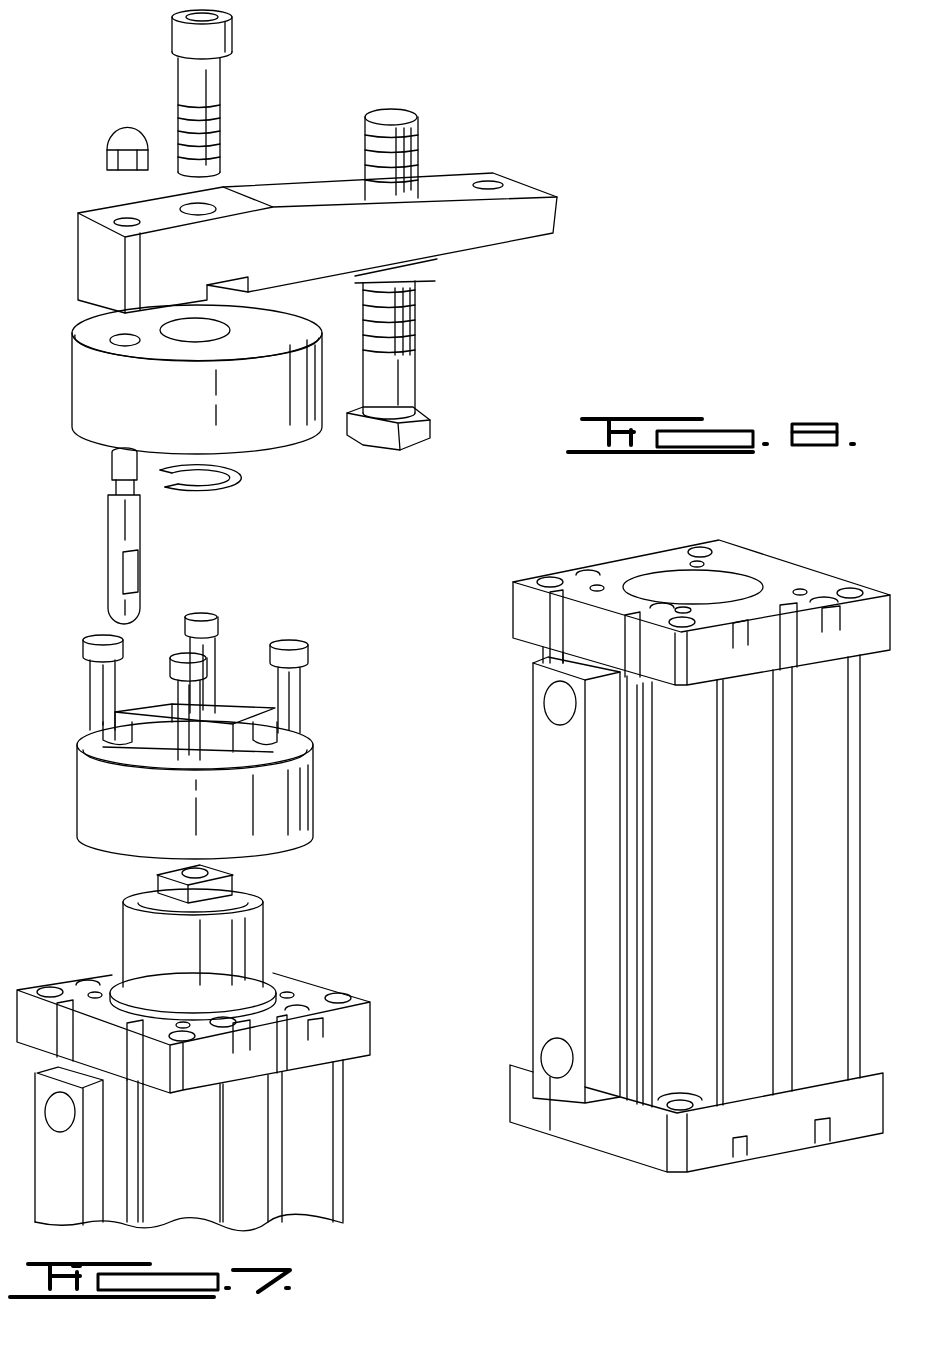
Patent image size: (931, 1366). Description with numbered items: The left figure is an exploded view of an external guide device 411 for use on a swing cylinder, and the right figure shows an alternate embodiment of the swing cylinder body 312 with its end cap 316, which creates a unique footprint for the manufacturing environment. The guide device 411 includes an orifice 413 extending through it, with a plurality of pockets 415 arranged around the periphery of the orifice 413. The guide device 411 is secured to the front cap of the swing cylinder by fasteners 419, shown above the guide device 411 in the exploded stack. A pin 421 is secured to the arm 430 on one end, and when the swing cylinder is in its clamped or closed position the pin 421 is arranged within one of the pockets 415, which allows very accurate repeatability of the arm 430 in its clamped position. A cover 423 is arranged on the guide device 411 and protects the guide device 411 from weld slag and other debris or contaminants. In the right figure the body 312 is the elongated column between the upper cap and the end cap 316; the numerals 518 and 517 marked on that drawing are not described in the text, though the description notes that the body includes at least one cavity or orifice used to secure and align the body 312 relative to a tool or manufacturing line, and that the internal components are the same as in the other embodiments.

In FIG. 7, the arm 430 is at (268, 192).
In FIG. 7, the cover 423 is at (302, 433).
In FIG. 7, the pin 421 is at (132, 520).
In FIG. 7, the fasteners 419 is at (212, 613).
In FIG. 7, the pockets 415 is at (128, 710).
In FIG. 7, the orifice 413 is at (217, 723).
In FIG. 7, the guide device 411 is at (297, 783).
In FIG. 8, the top plate of cylinder body 518 is at (722, 555).
In FIG. 8, the side port block 517 is at (557, 702).
In FIG. 8, the swing cylinder body 312 is at (678, 880).
In FIG. 8, the end cap 316 is at (753, 1143).